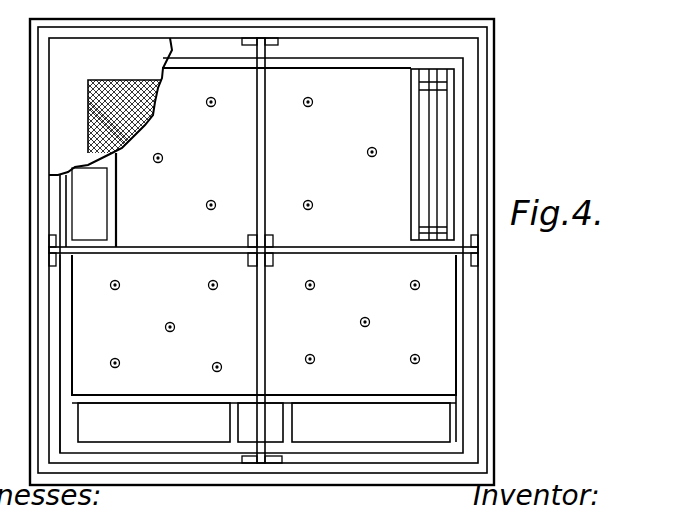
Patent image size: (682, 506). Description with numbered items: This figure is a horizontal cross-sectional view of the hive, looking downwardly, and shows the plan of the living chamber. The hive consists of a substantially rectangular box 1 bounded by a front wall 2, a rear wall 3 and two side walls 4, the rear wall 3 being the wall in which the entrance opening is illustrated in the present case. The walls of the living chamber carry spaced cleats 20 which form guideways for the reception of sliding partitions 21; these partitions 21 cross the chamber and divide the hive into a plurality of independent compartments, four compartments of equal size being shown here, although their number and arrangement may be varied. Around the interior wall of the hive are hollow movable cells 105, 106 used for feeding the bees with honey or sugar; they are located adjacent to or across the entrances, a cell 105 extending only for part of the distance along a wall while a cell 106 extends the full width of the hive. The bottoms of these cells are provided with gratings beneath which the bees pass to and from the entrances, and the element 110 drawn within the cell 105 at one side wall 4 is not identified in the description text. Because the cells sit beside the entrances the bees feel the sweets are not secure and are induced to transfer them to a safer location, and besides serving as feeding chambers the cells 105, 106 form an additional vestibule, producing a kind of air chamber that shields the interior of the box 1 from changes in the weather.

The rectangular box 1 is at (261, 255).
The front wall 2 is at (64, 347).
The rear wall 3 is at (457, 326).
The side walls 4 is at (367, 70).
The spaced cleats 20 is at (279, 44).
The sliding partitions 21 is at (258, 149).
The hollow movable cell 105 is at (118, 210).
The hollow movable cell 106 is at (339, 403).
The column bars 110 is at (431, 134).